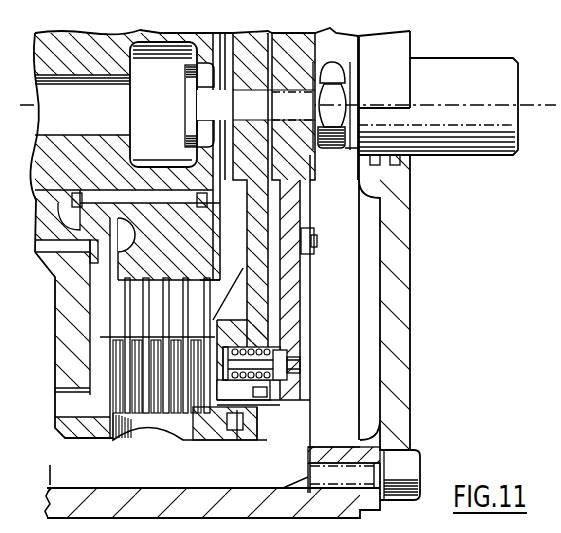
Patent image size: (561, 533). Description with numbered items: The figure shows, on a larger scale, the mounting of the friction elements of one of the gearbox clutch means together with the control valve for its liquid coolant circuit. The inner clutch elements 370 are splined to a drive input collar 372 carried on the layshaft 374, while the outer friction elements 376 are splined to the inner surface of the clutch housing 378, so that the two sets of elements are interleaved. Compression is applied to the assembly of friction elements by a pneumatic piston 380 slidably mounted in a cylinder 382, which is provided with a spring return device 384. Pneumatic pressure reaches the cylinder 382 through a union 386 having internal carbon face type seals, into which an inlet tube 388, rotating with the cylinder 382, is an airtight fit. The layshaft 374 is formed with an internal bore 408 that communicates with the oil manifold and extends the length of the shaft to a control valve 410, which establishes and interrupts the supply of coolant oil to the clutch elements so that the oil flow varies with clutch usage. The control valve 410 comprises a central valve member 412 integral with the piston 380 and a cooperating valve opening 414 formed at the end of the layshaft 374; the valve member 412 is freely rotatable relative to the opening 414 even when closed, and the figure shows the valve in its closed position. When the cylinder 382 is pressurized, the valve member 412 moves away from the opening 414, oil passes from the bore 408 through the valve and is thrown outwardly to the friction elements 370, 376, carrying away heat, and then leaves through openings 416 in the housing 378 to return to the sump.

The inner clutch elements 370 is at (185, 314).
The drive input collar 372 is at (301, 265).
The layshaft 374 is at (192, 114).
The outer friction elements 376 is at (187, 437).
The clutch housing 378 is at (87, 432).
The pneumatic piston 380 is at (262, 336).
The cylinder 382 is at (275, 402).
The spring return device 384 is at (258, 321).
The union 386 is at (440, 146).
The inlet tube 388 is at (393, 148).
The internal bore 408 is at (83, 114).
The control valve 410 is at (220, 141).
The central valve member 412 is at (97, 148).
The valve opening 414 is at (206, 83).
The openings 416 is at (148, 427).